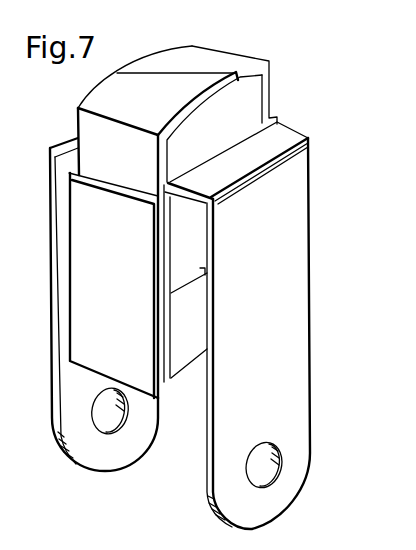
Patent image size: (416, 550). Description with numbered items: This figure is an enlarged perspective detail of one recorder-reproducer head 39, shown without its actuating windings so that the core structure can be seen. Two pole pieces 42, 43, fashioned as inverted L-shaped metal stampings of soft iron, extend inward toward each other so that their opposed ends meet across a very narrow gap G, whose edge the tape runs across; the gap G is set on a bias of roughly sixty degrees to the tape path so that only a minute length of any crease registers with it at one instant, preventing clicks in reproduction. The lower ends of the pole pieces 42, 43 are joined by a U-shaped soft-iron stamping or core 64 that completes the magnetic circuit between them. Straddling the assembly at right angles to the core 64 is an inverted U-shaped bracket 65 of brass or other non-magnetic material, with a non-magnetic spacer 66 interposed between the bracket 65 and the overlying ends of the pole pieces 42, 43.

The recorder-reproducer head 39 is at (193, 275).
The pole piece 42 is at (108, 93).
The pole piece 43 is at (168, 55).
The U-shaped core 64 is at (82, 275).
The inverted U-shaped bracket 65 is at (304, 211).
The spacer 66 is at (258, 103).
The gap G is at (177, 73).